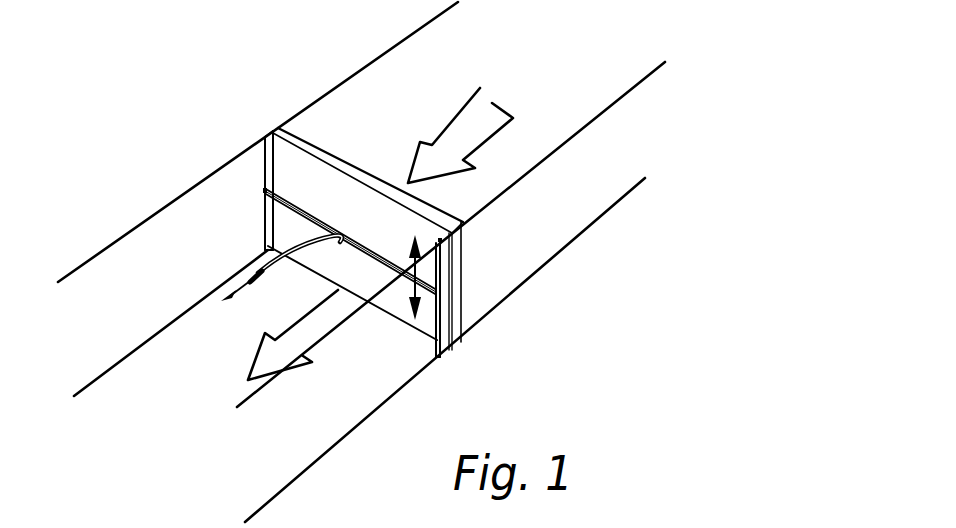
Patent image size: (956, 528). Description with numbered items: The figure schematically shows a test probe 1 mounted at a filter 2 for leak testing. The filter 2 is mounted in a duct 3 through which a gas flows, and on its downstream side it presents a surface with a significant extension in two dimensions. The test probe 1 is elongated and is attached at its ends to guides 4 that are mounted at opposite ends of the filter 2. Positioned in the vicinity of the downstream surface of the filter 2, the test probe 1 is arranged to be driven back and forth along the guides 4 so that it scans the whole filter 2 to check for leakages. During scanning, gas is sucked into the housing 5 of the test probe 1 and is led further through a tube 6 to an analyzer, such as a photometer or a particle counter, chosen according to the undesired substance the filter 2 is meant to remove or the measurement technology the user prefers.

The test probe 1 is at (334, 240).
The filter 2 is at (274, 222).
The duct 3 is at (560, 242).
The guides 4 is at (266, 172).
The housing 5 is at (396, 260).
The tube 6 is at (260, 284).